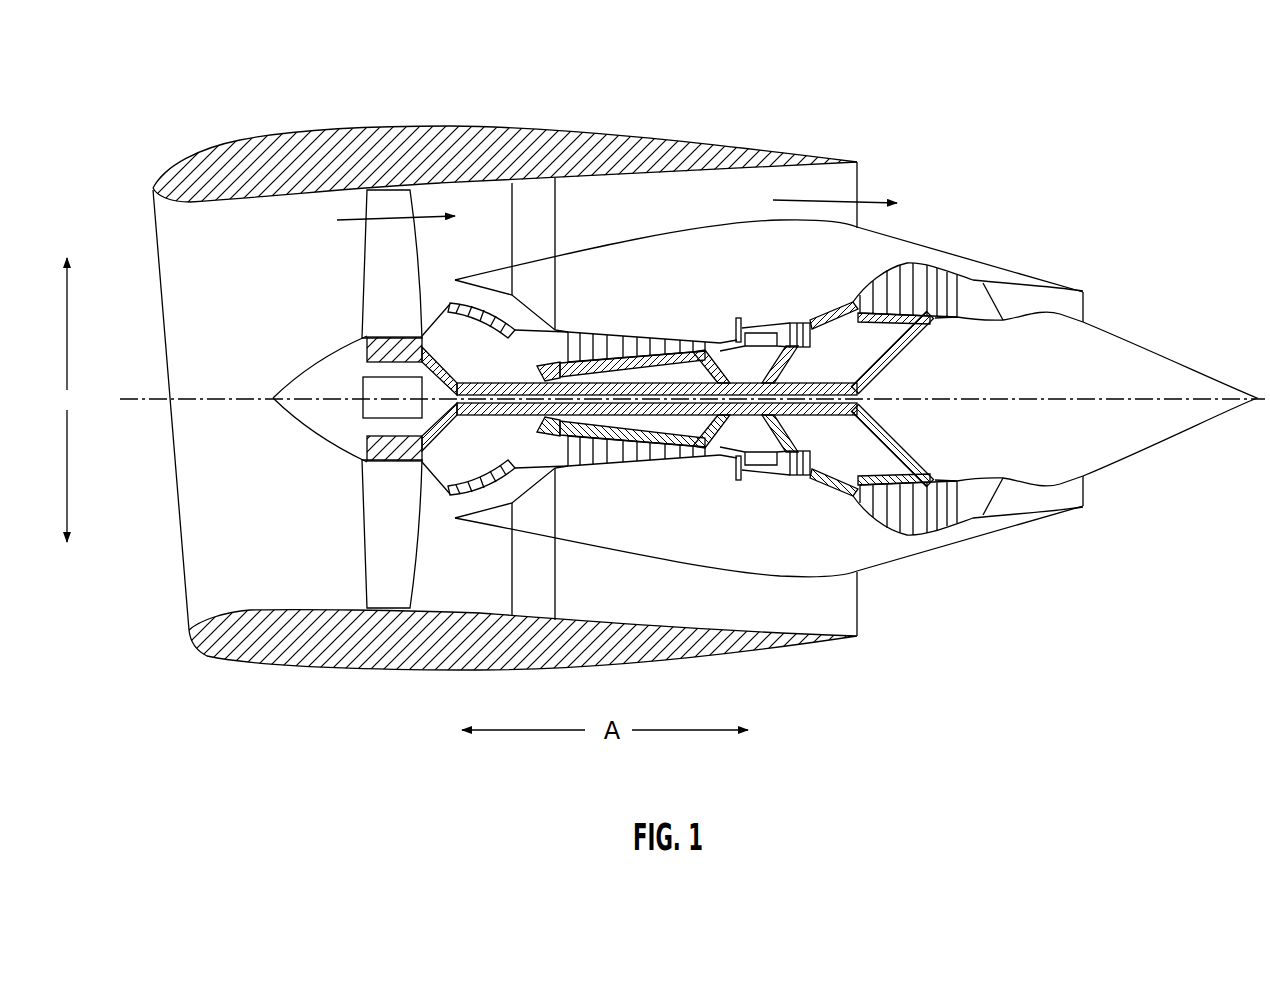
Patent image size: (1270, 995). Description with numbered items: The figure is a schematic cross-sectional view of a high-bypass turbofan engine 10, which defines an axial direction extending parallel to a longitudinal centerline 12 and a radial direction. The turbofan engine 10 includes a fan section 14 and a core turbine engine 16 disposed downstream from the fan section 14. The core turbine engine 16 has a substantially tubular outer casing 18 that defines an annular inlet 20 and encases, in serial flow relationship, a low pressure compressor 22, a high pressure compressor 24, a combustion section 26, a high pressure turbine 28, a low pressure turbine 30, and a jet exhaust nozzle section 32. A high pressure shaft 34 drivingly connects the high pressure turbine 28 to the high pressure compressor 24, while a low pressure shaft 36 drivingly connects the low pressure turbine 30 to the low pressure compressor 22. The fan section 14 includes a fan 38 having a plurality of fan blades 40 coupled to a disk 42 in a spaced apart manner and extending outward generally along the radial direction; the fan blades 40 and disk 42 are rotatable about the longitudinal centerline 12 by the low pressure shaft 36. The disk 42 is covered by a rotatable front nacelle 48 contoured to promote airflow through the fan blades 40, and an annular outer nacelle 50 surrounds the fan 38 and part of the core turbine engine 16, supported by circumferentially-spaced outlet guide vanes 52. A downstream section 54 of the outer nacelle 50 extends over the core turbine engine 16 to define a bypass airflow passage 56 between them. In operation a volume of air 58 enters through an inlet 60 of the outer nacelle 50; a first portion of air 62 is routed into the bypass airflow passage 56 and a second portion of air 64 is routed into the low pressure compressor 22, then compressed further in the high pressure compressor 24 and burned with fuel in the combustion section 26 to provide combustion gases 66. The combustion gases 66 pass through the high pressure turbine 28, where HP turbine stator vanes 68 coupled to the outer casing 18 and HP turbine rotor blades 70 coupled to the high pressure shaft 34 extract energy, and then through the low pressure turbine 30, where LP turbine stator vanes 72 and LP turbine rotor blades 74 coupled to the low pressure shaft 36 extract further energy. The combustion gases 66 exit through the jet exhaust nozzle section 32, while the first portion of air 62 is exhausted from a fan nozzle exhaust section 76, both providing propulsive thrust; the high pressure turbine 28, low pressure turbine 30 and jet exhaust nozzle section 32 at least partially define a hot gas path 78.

The turbofan engine 10 is at (953, 155).
The longitudinal centerline 12 is at (1023, 398).
The fan section 14 is at (418, 108).
The core turbine engine 16 is at (718, 298).
The outer casing 18 is at (690, 558).
The annular inlet 20 is at (463, 502).
The low pressure compressor 22 is at (520, 473).
The high pressure compressor 24 is at (585, 465).
The combustion section 26 is at (758, 463).
The high pressure turbine 28 is at (820, 467).
The low pressure turbine 30 is at (943, 533).
The jet exhaust nozzle section 32 is at (1083, 292).
The high pressure shaft 34 is at (792, 347).
The low pressure shaft 36 is at (493, 380).
The fan 38 is at (340, 268).
The fan blades 40 is at (363, 553).
The disk 42 is at (365, 350).
The front nacelle 48 is at (302, 370).
The outer nacelle 50 is at (413, 673).
The outlet guide vanes 52 is at (556, 202).
The downstream section 54 is at (708, 133).
The bypass airflow passage 56 is at (619, 203).
The volume of air 58 is at (83, 399).
The inlet 60 is at (187, 597).
The first portion of air 62 is at (352, 218).
The second portion of air 64 is at (453, 303).
The combustion gases 66 is at (933, 515).
The HP turbine stator vanes 68 is at (785, 470).
The HP turbine rotor blades 70 is at (803, 467).
The LP turbine stator vanes 72 is at (867, 513).
The LP turbine rotor blades 74 is at (877, 513).
The fan nozzle exhaust section 76 is at (860, 177).
The hot gas path 78 is at (853, 300).